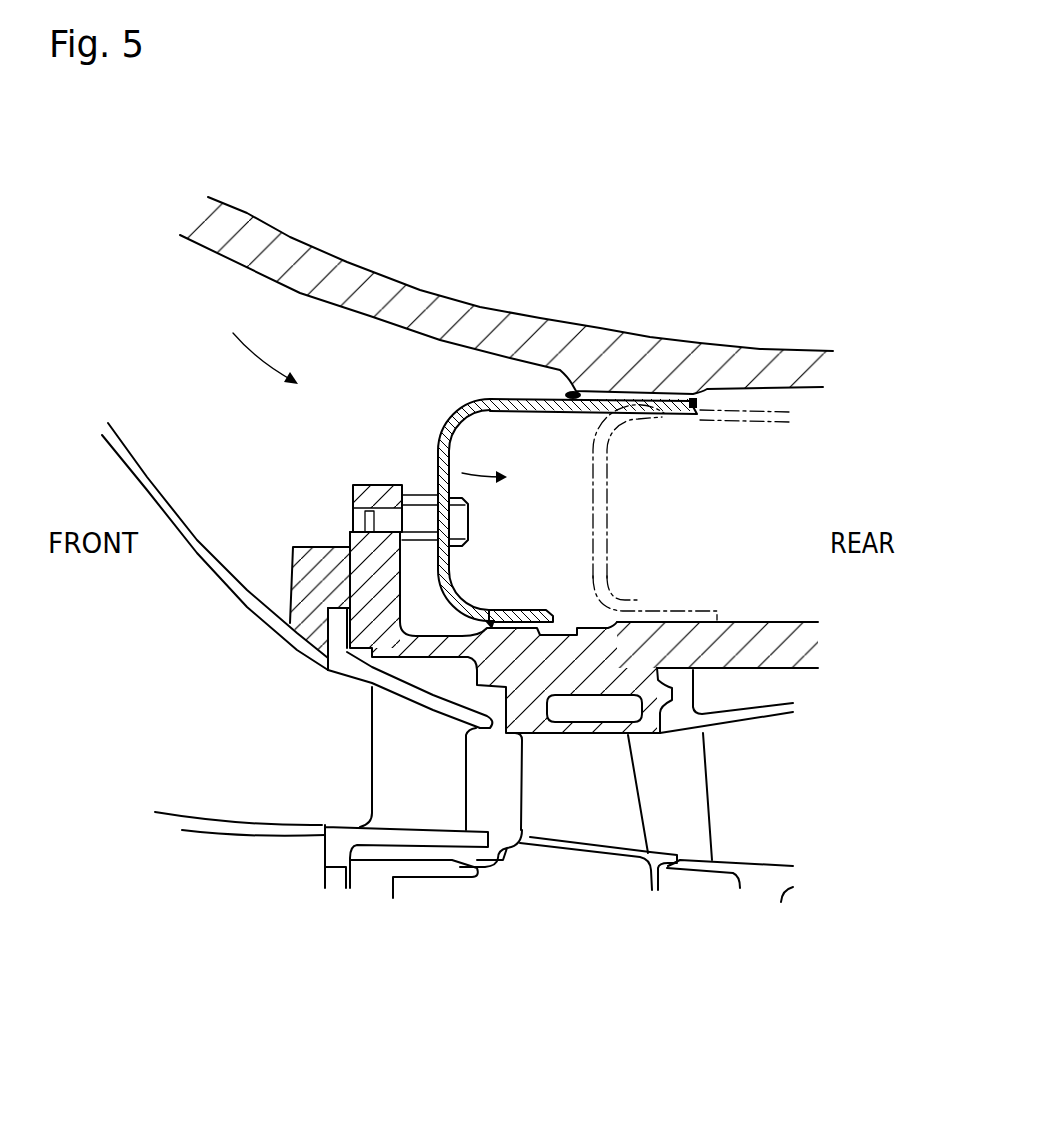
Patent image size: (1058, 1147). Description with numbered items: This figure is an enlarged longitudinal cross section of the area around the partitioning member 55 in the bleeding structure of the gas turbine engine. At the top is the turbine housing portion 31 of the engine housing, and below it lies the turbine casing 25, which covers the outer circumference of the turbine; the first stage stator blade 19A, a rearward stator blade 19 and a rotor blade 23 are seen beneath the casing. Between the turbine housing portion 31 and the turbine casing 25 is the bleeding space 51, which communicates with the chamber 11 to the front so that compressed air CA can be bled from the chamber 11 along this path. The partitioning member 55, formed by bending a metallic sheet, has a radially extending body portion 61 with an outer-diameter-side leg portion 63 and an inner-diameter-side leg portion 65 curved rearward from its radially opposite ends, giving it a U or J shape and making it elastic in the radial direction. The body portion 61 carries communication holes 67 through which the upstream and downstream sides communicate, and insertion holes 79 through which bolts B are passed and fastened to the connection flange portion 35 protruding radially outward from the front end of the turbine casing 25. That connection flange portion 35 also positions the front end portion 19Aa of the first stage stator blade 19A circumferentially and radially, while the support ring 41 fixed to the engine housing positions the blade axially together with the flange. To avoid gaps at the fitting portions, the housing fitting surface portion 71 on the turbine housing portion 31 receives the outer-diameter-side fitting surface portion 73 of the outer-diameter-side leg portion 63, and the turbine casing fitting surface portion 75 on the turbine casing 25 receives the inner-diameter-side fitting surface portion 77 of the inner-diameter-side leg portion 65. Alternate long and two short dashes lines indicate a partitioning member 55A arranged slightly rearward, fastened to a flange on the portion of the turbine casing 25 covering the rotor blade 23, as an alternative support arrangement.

The turbine housing portion 31 is at (505, 313).
The chamber 11 is at (233, 429).
The bleeding space 51 is at (738, 533).
The compressed air CA is at (267, 360).
The partitioning member 55 is at (456, 419).
The partitioning member 55A is at (610, 488).
The outer-diameter-side leg portion 63 is at (559, 413).
The outer-diameter-side fitting surface portion 73 is at (572, 394).
The housing fitting surface portion 71 is at (668, 416).
The communication hole 67 is at (432, 460).
The body portion 61 is at (451, 494).
The connection flange portion 35 is at (385, 486).
The bolt B is at (462, 523).
The insertion hole 79 is at (437, 530).
The inner-diameter-side leg portion 65 is at (492, 616).
The turbine casing fitting surface portion 75 is at (517, 616).
The inner-diameter-side fitting surface portion 77 is at (560, 617).
The turbine casing 25 is at (730, 621).
The support ring 41 is at (293, 547).
The first stage stator blade 19A is at (397, 812).
The front end portion 19Aa is at (338, 656).
The rotor blade 23 is at (577, 822).
The stator blade 19 is at (755, 835).